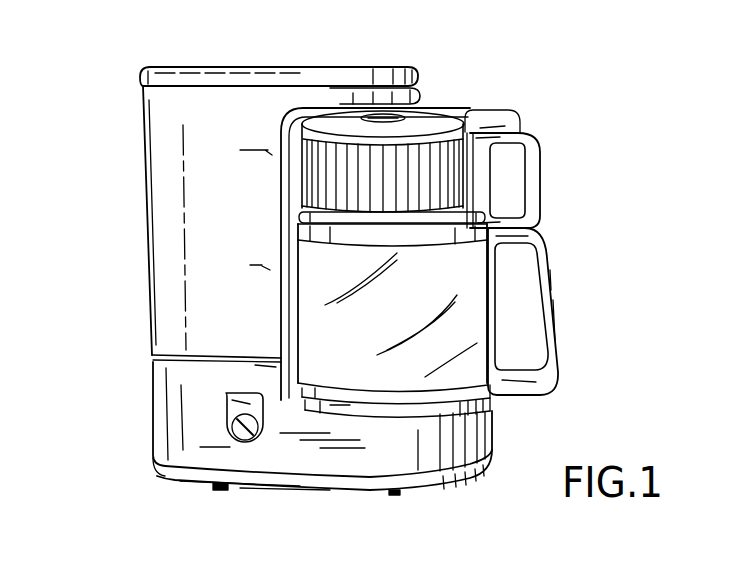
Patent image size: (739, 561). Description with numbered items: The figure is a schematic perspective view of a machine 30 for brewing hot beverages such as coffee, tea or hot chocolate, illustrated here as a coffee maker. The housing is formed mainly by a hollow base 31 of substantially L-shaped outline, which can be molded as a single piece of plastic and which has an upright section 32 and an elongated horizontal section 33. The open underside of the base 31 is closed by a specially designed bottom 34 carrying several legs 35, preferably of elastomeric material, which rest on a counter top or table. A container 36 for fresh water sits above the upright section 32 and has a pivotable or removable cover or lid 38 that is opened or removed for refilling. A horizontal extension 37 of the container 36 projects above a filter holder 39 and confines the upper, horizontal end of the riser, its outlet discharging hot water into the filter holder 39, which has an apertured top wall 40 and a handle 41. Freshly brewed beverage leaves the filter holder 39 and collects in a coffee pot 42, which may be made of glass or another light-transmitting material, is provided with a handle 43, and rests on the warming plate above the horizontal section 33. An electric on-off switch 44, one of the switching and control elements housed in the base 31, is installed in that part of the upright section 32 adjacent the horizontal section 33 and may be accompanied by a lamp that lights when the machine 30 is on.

The machine 30 is at (121, 213).
The hollow base 31 is at (130, 403).
The upright section 32 is at (150, 374).
The horizontal section 33 is at (494, 431).
The bottom 34 is at (313, 486).
The legs 35 is at (218, 491).
The container 36 is at (225, 277).
The horizontal extension 37 is at (383, 100).
The cover or lid 38 is at (285, 68).
The filter holder 39 is at (416, 186).
The apertured top wall 40 is at (450, 112).
The handle 41 is at (541, 178).
The coffee pot 42 is at (408, 312).
The handle 43 is at (549, 301).
The electric on-off switch 44 is at (213, 424).